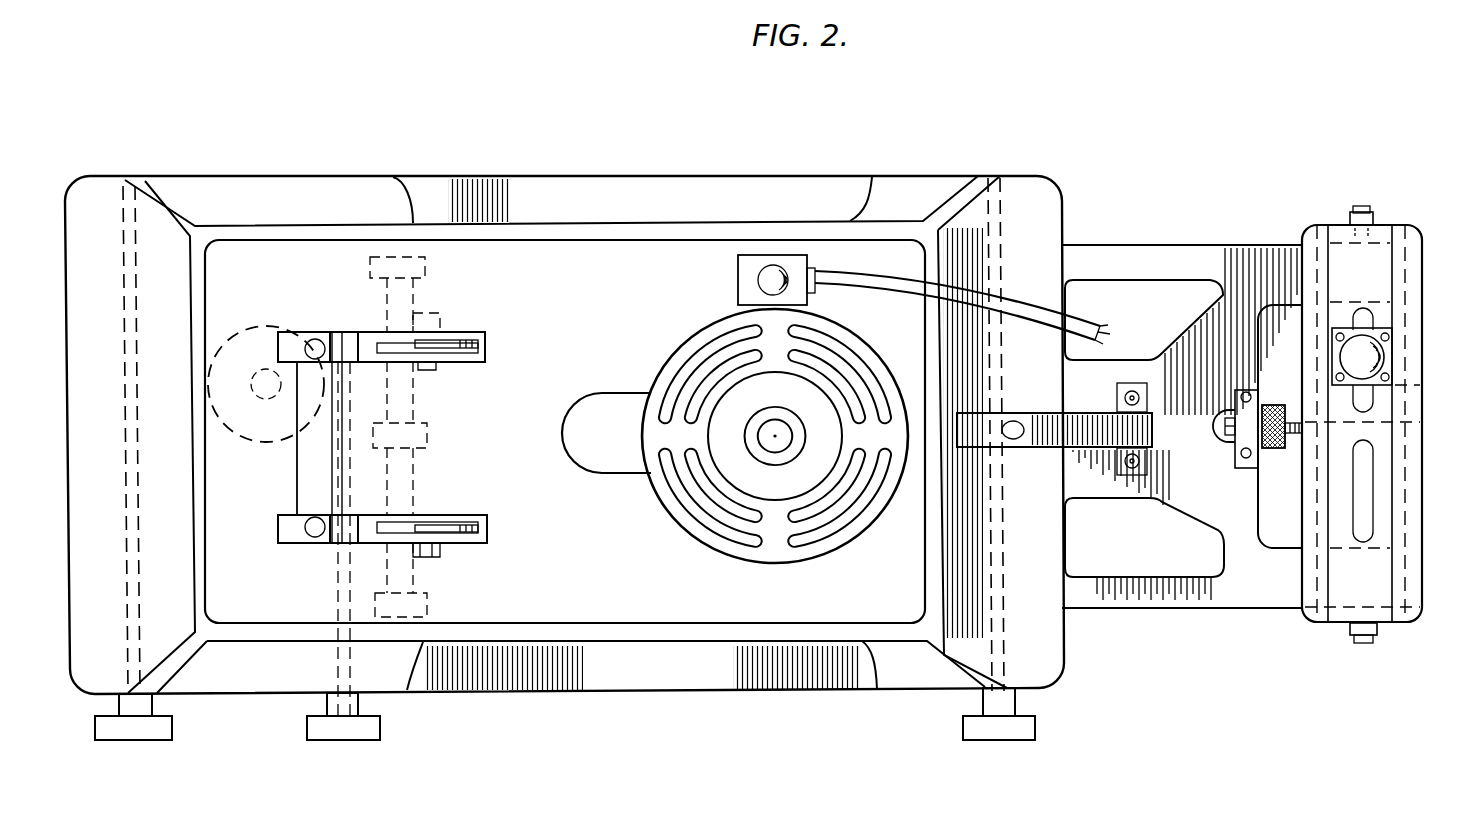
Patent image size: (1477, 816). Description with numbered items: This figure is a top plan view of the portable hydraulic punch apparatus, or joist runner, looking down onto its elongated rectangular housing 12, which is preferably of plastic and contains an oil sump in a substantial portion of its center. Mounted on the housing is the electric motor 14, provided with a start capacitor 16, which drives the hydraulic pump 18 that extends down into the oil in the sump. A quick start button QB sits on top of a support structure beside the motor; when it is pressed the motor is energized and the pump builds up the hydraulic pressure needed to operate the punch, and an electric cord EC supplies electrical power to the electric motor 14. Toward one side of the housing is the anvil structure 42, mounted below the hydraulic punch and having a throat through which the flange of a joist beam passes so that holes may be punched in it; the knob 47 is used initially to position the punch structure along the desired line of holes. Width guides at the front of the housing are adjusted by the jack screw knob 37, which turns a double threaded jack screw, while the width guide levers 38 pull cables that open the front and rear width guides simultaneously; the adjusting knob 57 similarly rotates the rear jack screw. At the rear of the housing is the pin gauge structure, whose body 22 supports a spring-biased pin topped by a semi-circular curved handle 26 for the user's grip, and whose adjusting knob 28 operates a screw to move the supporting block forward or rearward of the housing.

The housing 12 is at (694, 636).
The electric motor 14 is at (785, 400).
The start capacitor 16 is at (603, 445).
The hydraulic pump 18 is at (982, 443).
The body 22 is at (1392, 364).
The semi-circular curved handle 26 is at (1364, 366).
The adjusting knob 28 is at (1270, 452).
The jack screw knob 37 is at (172, 727).
The width guide levers 38 is at (450, 362).
The anvil structure 42 is at (243, 375).
The knob 47 is at (380, 727).
The adjusting knob 57 is at (1035, 728).
The quick start button QB is at (773, 268).
The electric cord EC is at (871, 284).